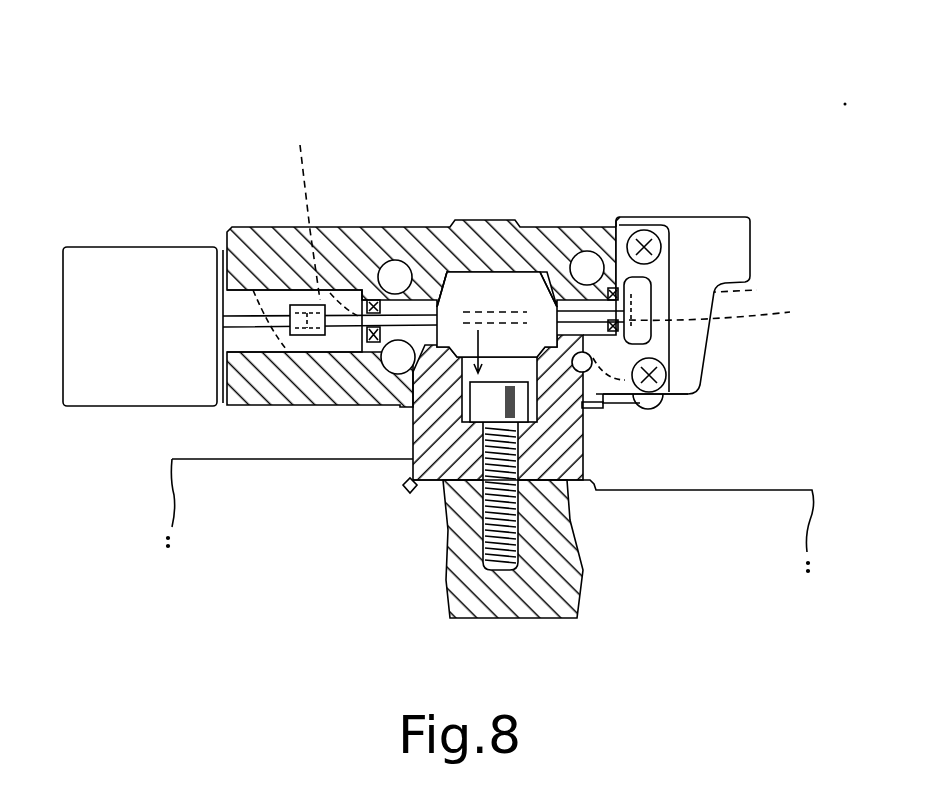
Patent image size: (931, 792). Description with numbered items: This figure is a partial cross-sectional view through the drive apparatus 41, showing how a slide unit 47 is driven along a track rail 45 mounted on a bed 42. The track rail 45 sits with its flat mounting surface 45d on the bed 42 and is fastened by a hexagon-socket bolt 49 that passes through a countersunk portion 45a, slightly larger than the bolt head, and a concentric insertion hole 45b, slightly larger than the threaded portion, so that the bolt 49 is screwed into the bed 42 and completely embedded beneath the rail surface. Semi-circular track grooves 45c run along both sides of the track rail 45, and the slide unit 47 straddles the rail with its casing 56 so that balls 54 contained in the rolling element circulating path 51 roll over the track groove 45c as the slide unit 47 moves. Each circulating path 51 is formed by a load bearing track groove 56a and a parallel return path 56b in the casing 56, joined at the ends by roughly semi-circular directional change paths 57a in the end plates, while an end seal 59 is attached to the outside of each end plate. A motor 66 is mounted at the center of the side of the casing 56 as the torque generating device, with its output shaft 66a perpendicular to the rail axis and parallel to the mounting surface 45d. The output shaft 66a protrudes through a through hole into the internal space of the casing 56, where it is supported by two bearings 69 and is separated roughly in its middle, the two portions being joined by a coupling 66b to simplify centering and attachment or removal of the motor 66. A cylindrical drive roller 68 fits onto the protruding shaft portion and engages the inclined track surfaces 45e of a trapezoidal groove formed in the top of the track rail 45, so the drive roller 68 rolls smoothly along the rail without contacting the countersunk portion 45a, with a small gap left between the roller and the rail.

The drive apparatus 41 is at (690, 93).
The bed 42 is at (773, 508).
The track rail 45 is at (585, 442).
The countersunk portion 45a is at (512, 404).
The insertion hole 45b is at (515, 465).
The track groove 45c is at (596, 352).
The mounting surface 45d is at (427, 492).
The track surface 45e is at (428, 262).
The slide unit 47 is at (717, 213).
The bolt 49 is at (500, 540).
The rolling element circulating path 51 is at (526, 234).
The ball 54 is at (395, 260).
The casing 56 is at (727, 227).
The load bearing track groove 56a is at (693, 393).
The return path 56b is at (582, 233).
The directional change path 57a is at (736, 314).
The end seal 59 is at (654, 269).
The motor 66 is at (127, 245).
The output shaft 66a is at (252, 305).
The coupling 66b is at (307, 335).
The drive roller 68 is at (487, 295).
The bearing 69 is at (373, 265).